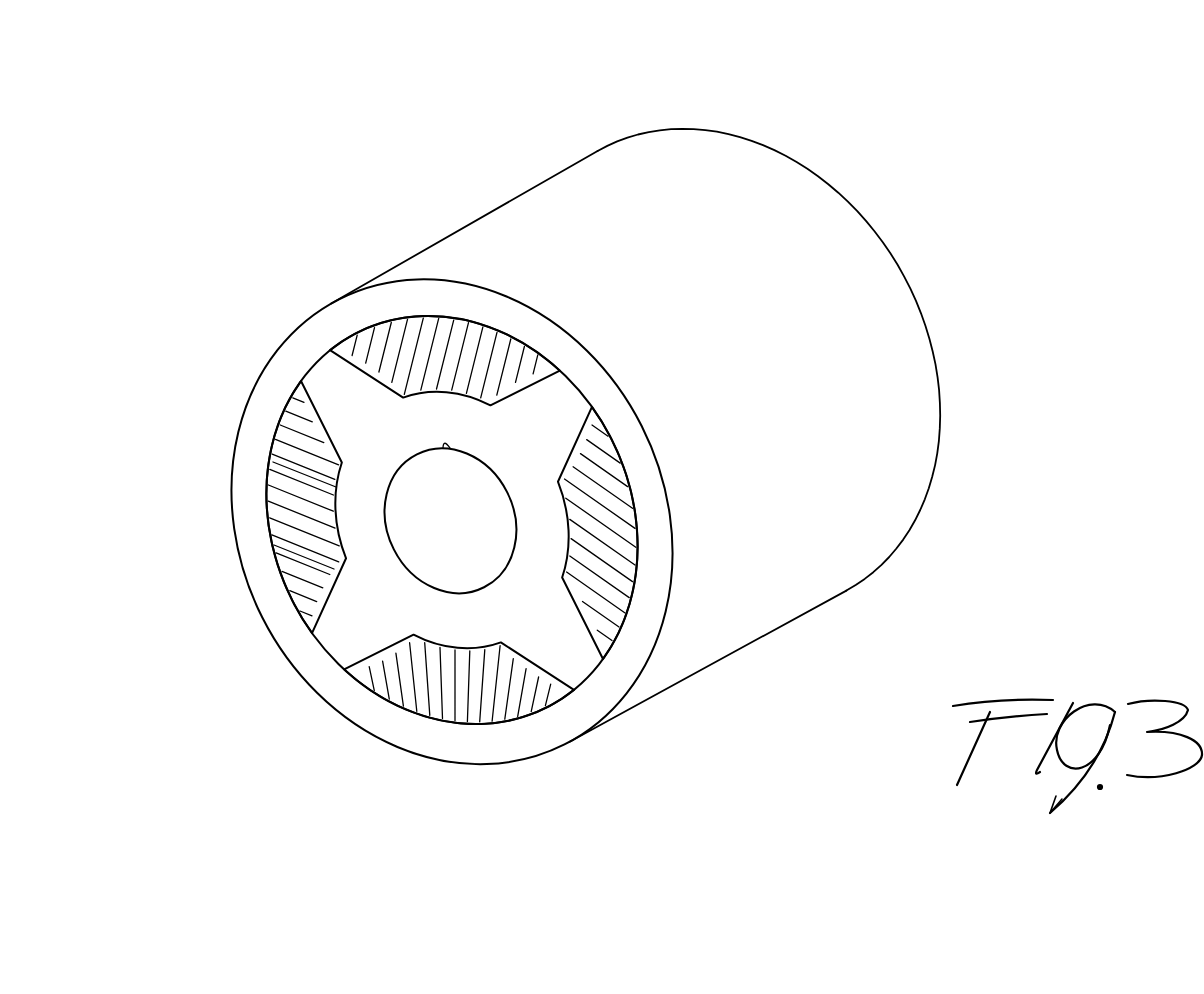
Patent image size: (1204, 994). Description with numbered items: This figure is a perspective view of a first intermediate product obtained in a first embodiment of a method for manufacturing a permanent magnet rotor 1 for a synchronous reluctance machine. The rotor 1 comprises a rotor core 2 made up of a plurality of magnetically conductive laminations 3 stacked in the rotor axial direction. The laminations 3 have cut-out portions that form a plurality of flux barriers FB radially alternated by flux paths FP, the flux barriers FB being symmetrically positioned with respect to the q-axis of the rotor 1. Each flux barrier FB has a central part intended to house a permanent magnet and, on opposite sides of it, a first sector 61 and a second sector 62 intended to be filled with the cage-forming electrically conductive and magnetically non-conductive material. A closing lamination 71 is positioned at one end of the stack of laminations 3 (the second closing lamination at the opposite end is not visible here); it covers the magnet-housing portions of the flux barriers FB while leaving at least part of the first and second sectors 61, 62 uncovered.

The rotor 1 is at (149, 135).
The rotor core 2 is at (913, 385).
The magnetically conductive laminations 3 is at (625, 590).
The first sector 61 is at (392, 337).
The second sector 62 is at (287, 452).
The closing lamination 71 is at (300, 355).
The flux paths FP is at (297, 503).
The flux barriers FB is at (445, 695).